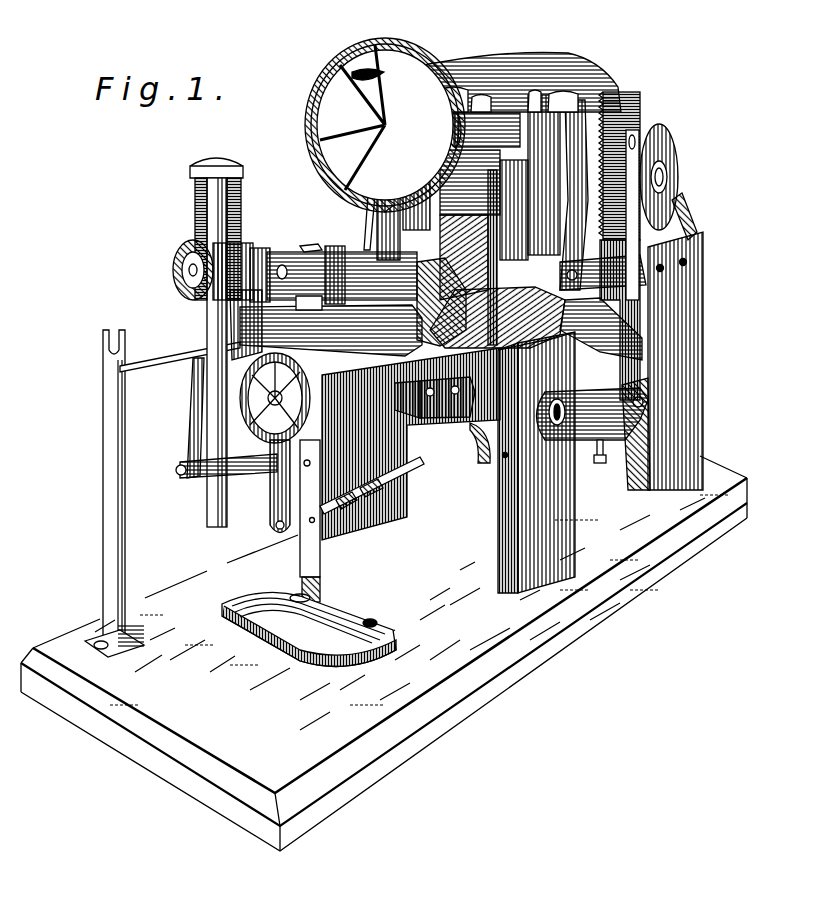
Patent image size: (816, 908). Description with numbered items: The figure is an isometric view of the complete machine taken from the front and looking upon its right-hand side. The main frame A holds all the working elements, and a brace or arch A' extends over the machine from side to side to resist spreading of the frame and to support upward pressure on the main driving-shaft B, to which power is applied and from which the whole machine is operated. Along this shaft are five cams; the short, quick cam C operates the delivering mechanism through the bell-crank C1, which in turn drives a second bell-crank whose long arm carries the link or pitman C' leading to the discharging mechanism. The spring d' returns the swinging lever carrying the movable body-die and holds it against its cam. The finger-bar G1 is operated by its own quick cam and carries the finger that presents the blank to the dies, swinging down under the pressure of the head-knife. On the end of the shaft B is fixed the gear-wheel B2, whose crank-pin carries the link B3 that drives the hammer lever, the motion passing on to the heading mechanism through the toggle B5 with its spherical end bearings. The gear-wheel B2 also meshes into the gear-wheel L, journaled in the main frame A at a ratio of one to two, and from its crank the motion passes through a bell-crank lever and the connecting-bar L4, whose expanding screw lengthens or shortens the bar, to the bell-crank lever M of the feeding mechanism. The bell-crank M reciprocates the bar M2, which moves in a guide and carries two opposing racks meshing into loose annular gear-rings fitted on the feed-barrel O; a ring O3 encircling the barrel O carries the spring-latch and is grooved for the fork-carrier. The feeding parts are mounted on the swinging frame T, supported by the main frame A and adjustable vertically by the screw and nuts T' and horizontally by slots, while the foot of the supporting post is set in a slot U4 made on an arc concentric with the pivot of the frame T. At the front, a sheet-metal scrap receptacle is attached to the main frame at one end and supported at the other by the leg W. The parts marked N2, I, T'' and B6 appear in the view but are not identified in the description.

The leg W is at (114, 493).
The bar M2 is at (210, 342).
The pulley N2 is at (268, 271).
The swinging frame T is at (326, 303).
The feed-barrel O is at (432, 301).
The ring O3 is at (331, 248).
The bell-crank lever M is at (243, 415).
The cam C is at (295, 521).
The connecting-bar L4 is at (376, 474).
The slot U4 is at (309, 627).
The support block I is at (502, 440).
The bracket T'' is at (447, 420).
The screw and nuts T' is at (375, 394).
The toggle B5 is at (593, 414).
The stud B6 is at (598, 461).
The link B3 is at (603, 293).
The main driving-shaft B is at (620, 314).
The main frame A is at (662, 361).
The gear-wheel B2 is at (631, 193).
The gear-wheel L is at (680, 138).
The finger-bar G1 is at (574, 195).
The spring d' is at (484, 120).
The link or pitman C' is at (363, 207).
The bell-crank C1 is at (390, 211).
The brace or arch A' is at (508, 71).